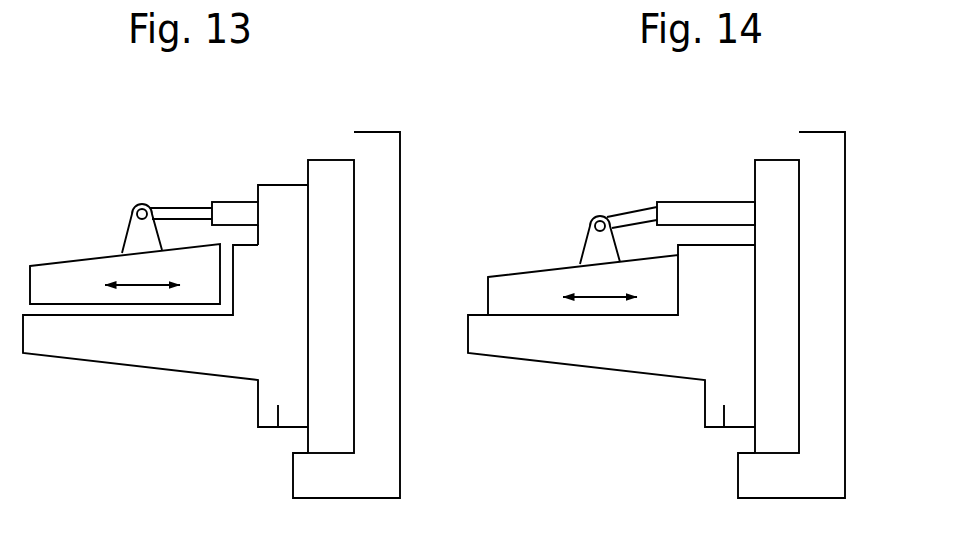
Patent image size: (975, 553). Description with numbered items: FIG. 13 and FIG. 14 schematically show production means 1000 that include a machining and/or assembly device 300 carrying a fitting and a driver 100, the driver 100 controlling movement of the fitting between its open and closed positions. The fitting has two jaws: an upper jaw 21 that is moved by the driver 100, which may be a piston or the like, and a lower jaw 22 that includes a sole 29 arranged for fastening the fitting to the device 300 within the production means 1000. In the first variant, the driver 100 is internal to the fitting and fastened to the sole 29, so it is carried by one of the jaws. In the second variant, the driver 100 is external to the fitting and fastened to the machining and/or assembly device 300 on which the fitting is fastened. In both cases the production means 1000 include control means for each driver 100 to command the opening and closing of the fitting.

In FIG. 13, the upper jaw 21 is at (72, 278).
In FIG. 14, the upper jaw 21 is at (530, 290).
In FIG. 13, the lower jaw 22 is at (115, 333).
In FIG. 14, the lower jaw 22 is at (560, 332).
In FIG. 13, the sole 29 is at (278, 437).
In FIG. 14, the sole 29 is at (724, 437).
In FIG. 13, the driver 100 is at (236, 215).
In FIG. 14, the driver 100 is at (683, 215).
In FIG. 13, the machining and/or assembly device 300 is at (318, 198).
In FIG. 14, the machining and/or assembly device 300 is at (763, 198).
In FIG. 13, the production means 1000 is at (418, 192).
In FIG. 14, the production means 1000 is at (863, 192).